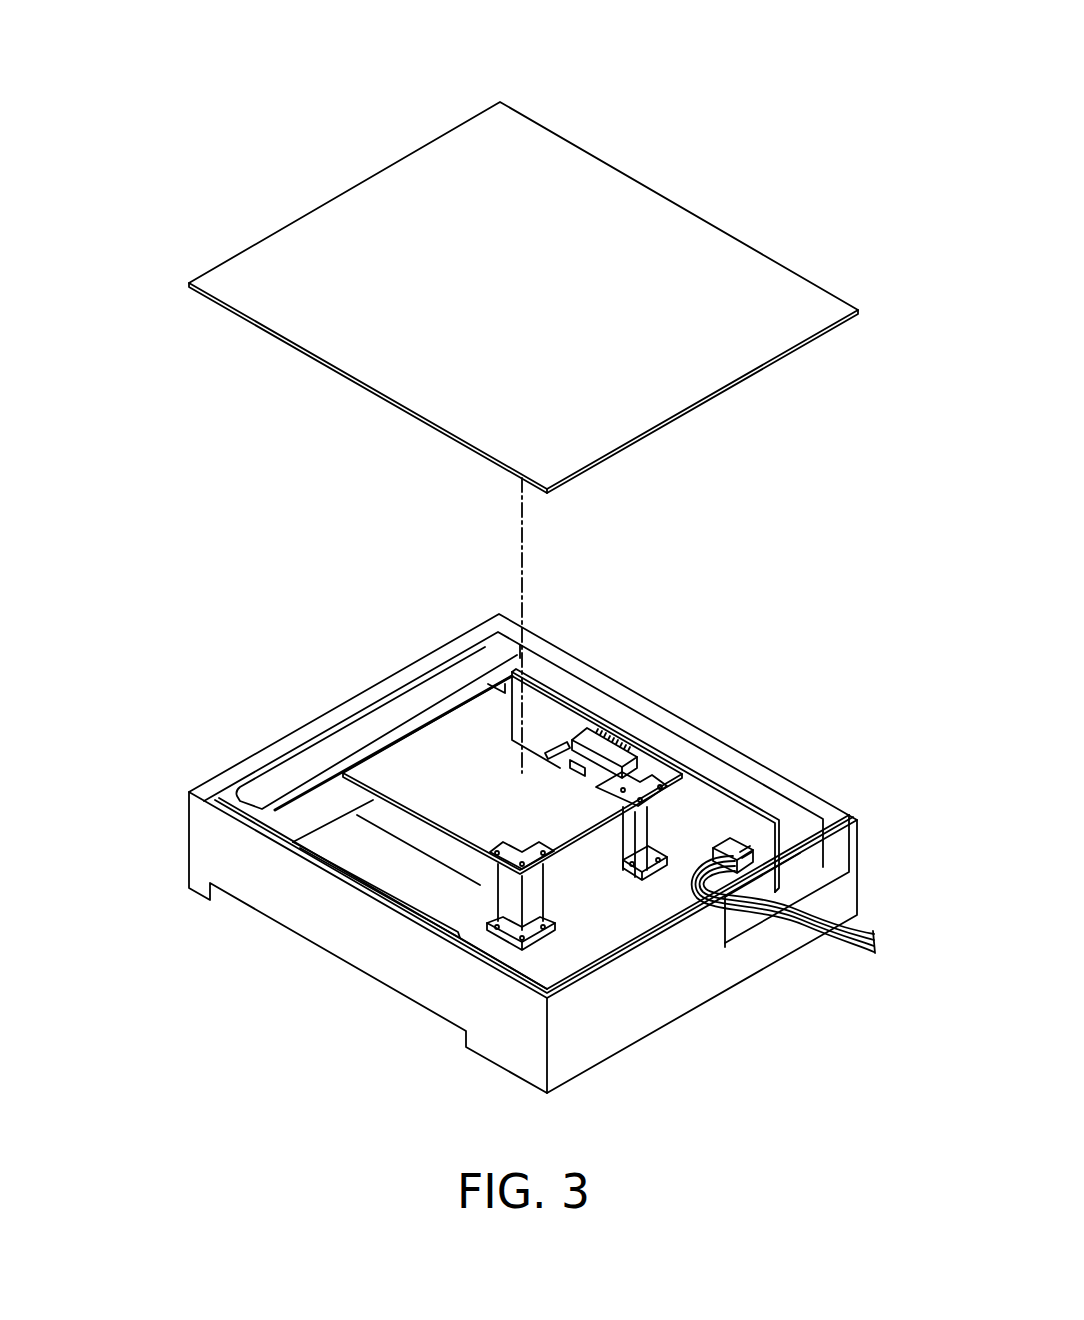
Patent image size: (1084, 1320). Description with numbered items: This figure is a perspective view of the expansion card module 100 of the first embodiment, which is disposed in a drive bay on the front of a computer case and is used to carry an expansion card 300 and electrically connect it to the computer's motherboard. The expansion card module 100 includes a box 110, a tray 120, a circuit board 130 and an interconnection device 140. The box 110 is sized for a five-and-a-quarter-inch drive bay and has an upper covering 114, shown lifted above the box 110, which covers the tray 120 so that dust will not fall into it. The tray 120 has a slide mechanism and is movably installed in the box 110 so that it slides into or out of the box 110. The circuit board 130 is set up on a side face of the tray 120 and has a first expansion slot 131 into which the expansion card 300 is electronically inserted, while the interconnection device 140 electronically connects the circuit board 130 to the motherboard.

The expansion card module 100 is at (142, 58).
The box 110 is at (184, 867).
The upper covering 114 is at (610, 185).
The tray 120 is at (605, 905).
The circuit board 130 is at (699, 776).
The first expansion slot 131 is at (614, 757).
The interconnection device 140 is at (862, 918).
The expansion card 300 is at (445, 737).